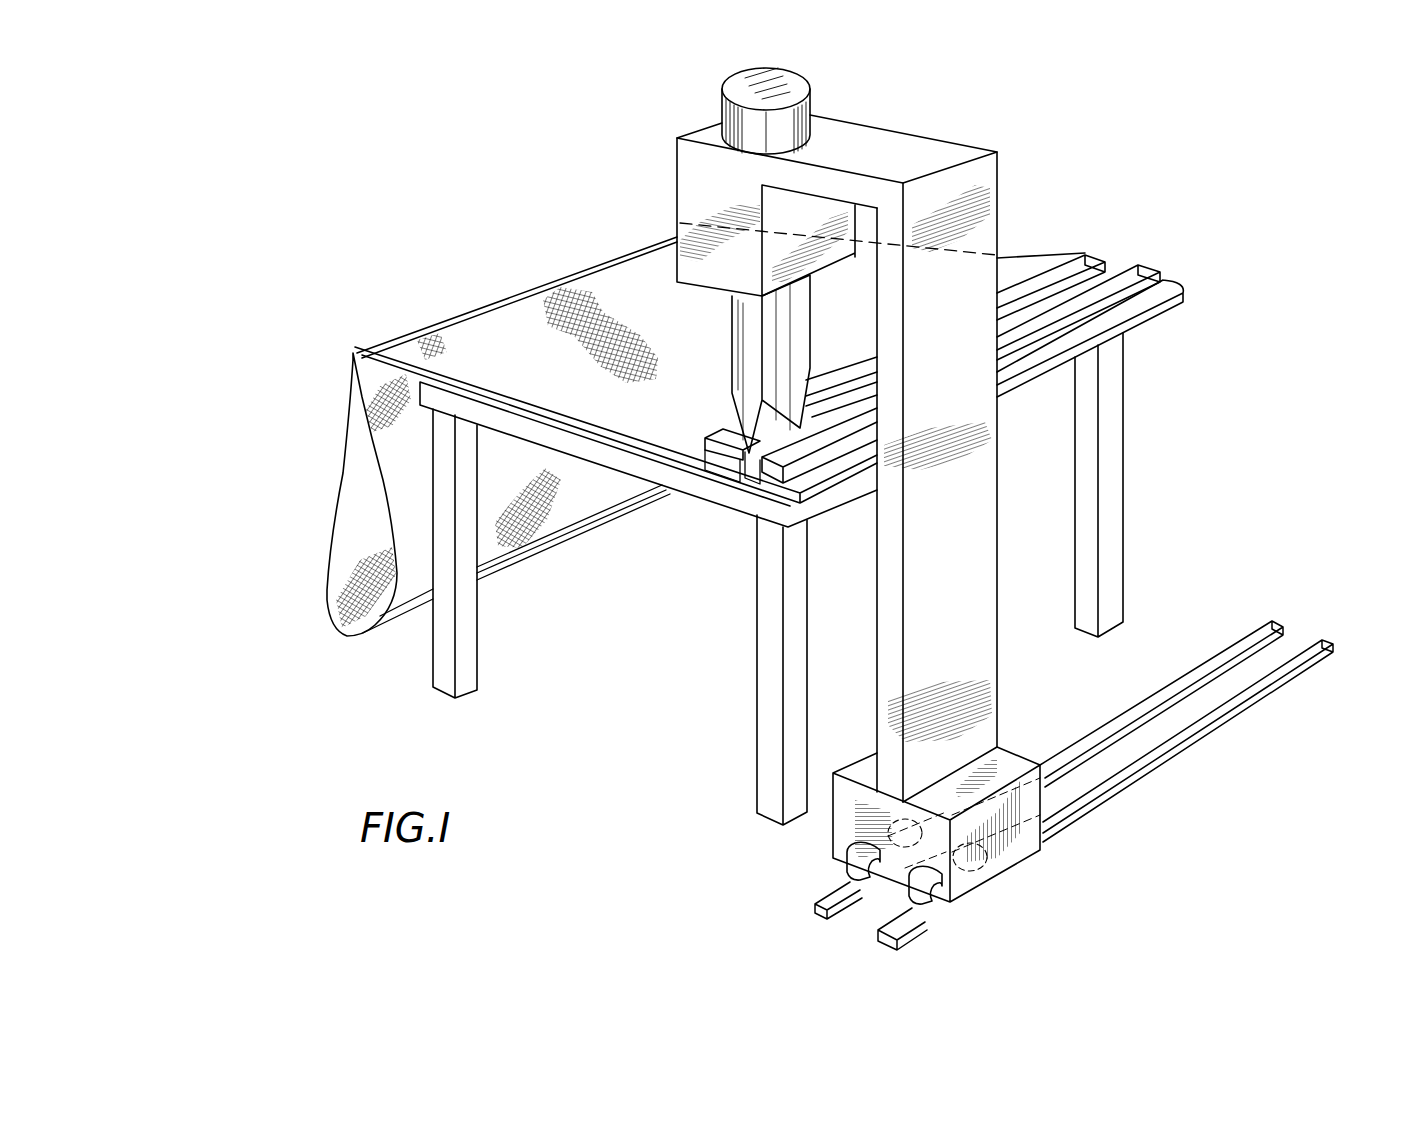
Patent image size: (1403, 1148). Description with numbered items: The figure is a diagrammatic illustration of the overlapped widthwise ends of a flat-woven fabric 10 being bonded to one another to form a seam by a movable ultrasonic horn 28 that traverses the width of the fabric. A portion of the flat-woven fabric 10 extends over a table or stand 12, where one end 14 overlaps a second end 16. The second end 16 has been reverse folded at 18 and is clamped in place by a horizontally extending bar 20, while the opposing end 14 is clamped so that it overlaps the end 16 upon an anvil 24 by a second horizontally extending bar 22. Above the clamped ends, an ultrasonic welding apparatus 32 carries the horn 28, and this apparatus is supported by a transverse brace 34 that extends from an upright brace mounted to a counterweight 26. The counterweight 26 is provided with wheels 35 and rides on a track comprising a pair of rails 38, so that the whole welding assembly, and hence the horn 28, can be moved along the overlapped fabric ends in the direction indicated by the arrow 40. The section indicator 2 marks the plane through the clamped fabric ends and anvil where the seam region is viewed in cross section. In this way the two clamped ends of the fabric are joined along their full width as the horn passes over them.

The section line 2- 2 is at (485, 462).
The flat-woven fabric 10 is at (323, 638).
The table or stand 12 is at (609, 460).
The one end 14 is at (700, 478).
The second end 16 is at (758, 500).
The reverse fold 18 is at (820, 480).
The horizontally extending bar 20 is at (784, 527).
The horizontally extending bar 22 is at (769, 370).
The anvil 24 is at (743, 467).
The counterweight 26 is at (985, 488).
The horn 28 is at (745, 405).
The ultrasonic welding apparatus 32 is at (683, 160).
The transverse brace 34 is at (931, 148).
The wheels 35 is at (853, 876).
The rails 38 is at (1247, 640).
The arrow 40 is at (822, 322).